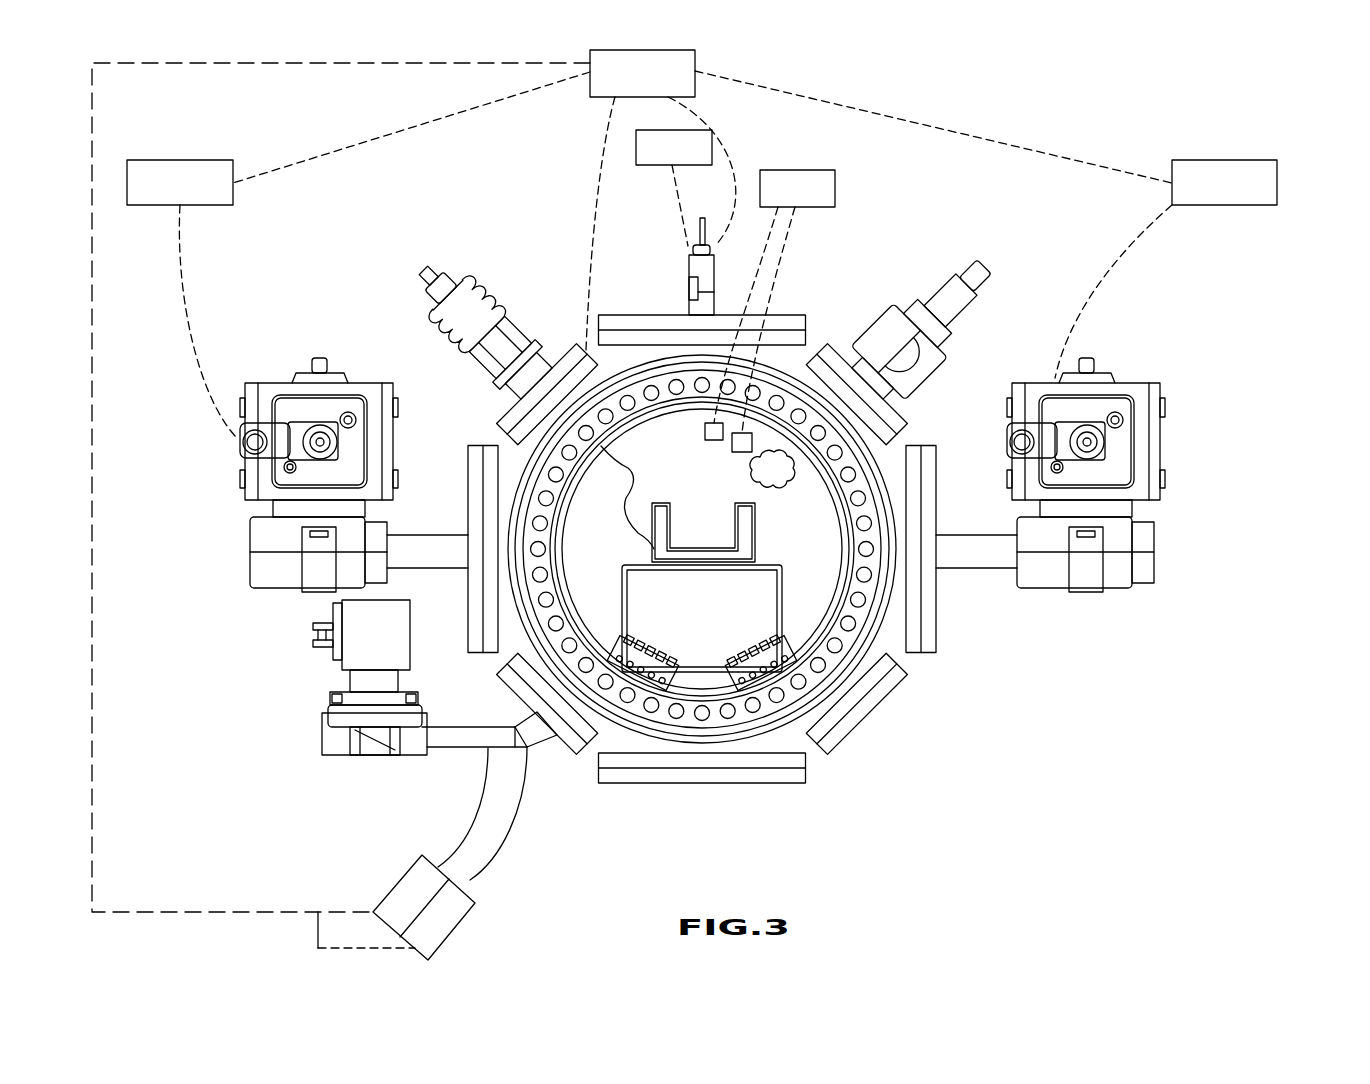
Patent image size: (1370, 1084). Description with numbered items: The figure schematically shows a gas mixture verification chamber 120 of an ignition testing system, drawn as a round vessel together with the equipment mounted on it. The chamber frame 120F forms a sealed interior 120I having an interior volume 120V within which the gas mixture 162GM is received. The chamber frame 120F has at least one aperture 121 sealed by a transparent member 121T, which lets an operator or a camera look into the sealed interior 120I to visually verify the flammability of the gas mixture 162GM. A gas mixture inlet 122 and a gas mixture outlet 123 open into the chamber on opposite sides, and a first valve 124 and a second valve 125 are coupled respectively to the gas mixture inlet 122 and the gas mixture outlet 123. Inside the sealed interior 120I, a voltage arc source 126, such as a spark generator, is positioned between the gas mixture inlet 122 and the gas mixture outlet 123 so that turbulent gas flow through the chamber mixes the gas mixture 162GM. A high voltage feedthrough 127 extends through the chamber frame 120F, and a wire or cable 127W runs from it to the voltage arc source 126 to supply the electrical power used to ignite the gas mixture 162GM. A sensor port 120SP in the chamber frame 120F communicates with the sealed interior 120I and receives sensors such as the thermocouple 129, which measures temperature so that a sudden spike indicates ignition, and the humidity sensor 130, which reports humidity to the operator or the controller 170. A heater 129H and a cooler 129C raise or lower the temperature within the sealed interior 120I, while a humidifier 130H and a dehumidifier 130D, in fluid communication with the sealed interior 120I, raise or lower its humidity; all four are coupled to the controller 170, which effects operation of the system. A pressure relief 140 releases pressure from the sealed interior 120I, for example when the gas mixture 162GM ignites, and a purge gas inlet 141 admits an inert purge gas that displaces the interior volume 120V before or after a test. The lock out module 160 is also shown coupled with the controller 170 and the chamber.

The gas mixture verification chamber 120 is at (1107, 142).
The chamber frame 120F is at (839, 708).
The sealed interior 120I is at (600, 548).
The sensor port 120SP is at (850, 290).
The interior volume 120V is at (608, 508).
The aperture 121 is at (634, 396).
The transparent member 121T is at (808, 578).
The gas mixture inlet 122 is at (426, 535).
The gas mixture outlet 123 is at (981, 570).
The first valve 124 is at (263, 382).
The second valve 125 is at (1133, 382).
The voltage arc source 126 is at (707, 642).
The high voltage feedthrough 127 is at (463, 275).
The wire or cable 127W is at (632, 468).
The thermocouple 129 is at (835, 188).
The cooler 129C is at (737, 452).
The heater 129H is at (705, 433).
The humidity sensor 130 is at (712, 150).
The dehumidifier 130D is at (457, 930).
The humidifier 130H is at (393, 887).
The pressure relief 140 is at (985, 292).
The purge gas inlet 141 is at (325, 757).
The lock out module 160 is at (178, 160).
The gas mixture 162GM is at (797, 472).
The controller 170 is at (695, 60).